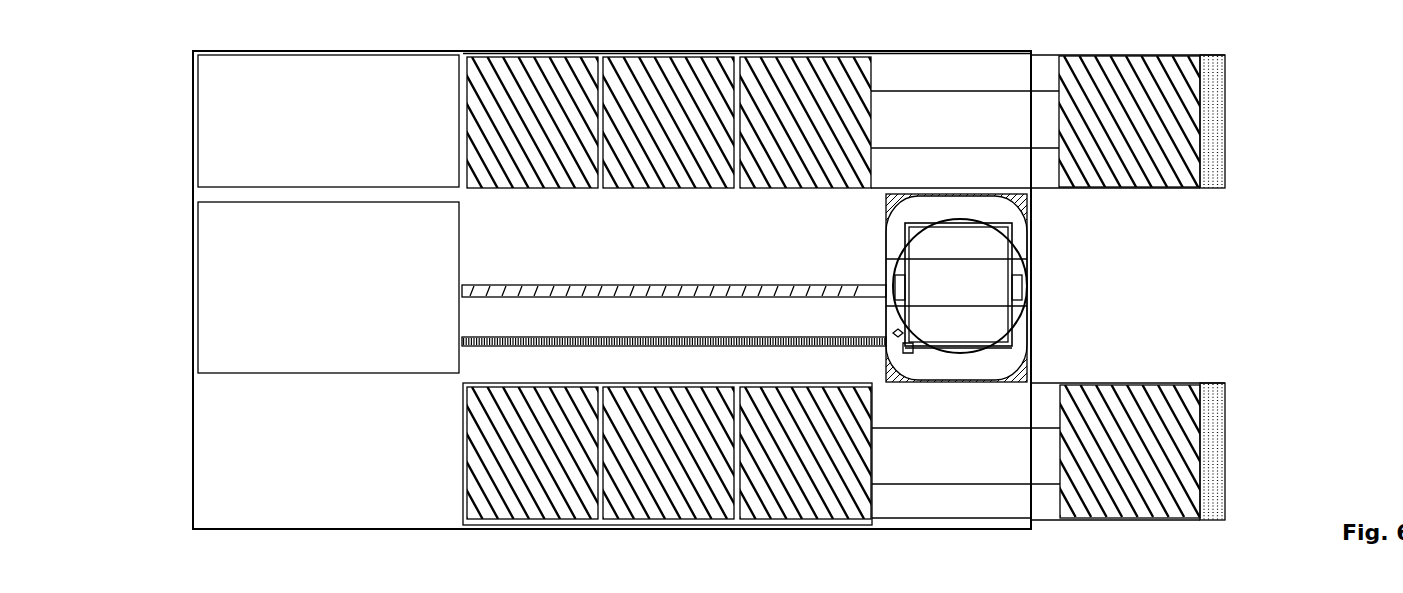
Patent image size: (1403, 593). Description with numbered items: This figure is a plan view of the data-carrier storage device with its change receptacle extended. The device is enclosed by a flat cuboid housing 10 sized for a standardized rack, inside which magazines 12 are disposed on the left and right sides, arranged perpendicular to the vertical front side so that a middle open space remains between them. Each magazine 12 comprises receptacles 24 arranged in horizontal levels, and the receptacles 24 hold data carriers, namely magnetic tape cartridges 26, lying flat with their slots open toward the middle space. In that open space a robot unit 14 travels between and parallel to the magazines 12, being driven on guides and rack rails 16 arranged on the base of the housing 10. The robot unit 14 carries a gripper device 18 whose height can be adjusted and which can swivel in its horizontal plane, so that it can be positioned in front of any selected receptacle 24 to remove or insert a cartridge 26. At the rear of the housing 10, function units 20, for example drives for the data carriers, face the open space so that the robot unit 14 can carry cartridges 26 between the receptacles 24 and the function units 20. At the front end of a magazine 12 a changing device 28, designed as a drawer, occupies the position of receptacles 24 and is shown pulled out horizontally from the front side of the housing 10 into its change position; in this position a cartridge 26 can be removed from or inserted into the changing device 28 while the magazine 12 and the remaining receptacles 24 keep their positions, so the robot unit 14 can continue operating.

The housing 10 is at (190, 416).
The magazine 12 is at (1188, 90).
The robot unit 14 is at (1018, 232).
The guides and rack rails 16 is at (675, 340).
The gripper device 18 is at (992, 321).
The function unit 20 is at (222, 318).
The receptacle 24 is at (742, 63).
The magnetic tape cartridge 26 is at (822, 83).
The changing device 28 is at (1103, 382).